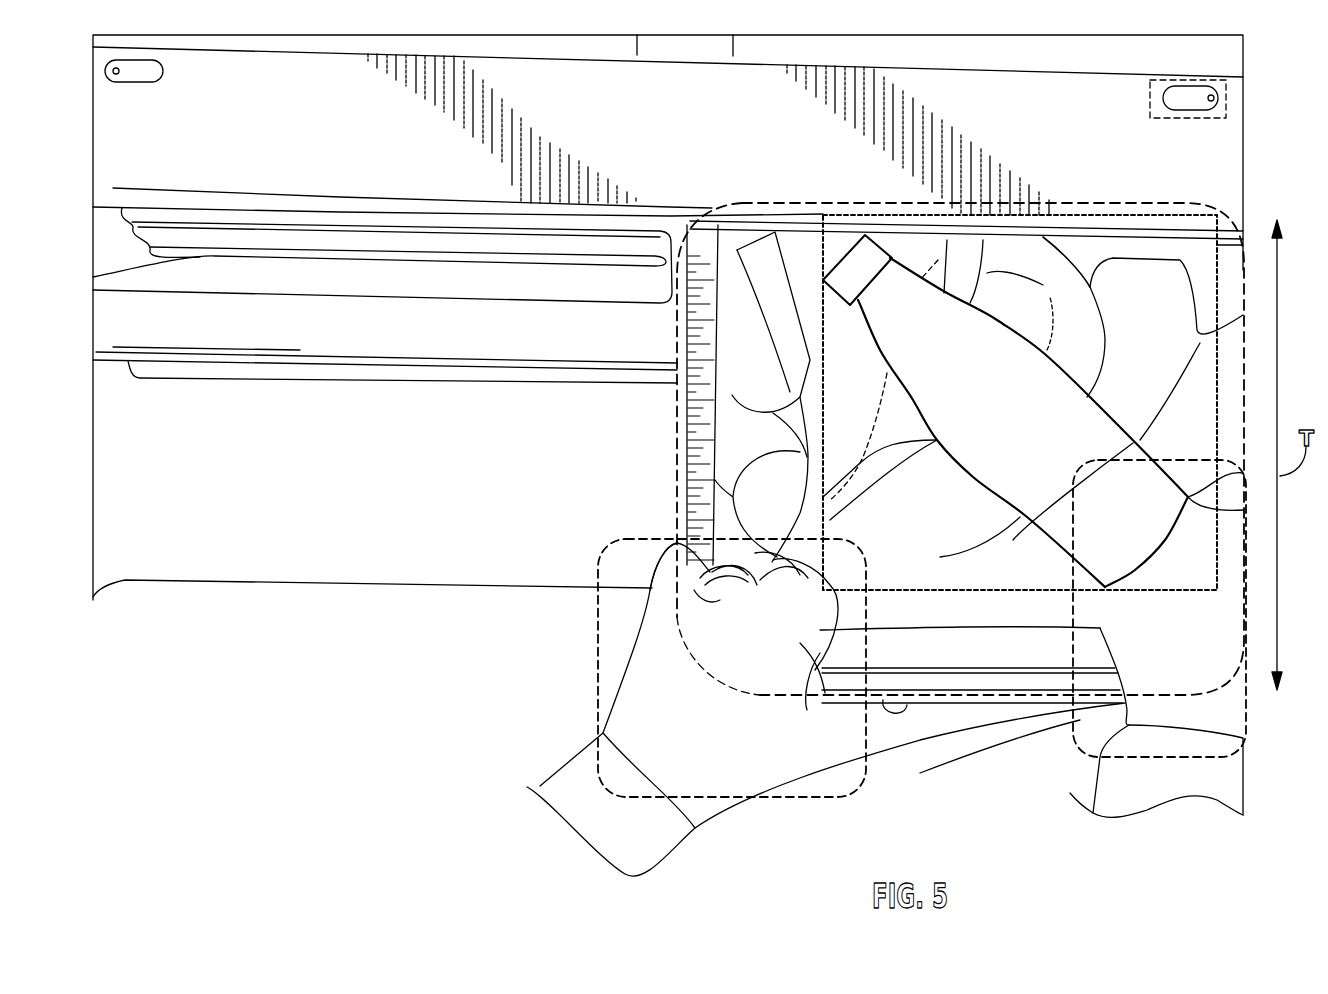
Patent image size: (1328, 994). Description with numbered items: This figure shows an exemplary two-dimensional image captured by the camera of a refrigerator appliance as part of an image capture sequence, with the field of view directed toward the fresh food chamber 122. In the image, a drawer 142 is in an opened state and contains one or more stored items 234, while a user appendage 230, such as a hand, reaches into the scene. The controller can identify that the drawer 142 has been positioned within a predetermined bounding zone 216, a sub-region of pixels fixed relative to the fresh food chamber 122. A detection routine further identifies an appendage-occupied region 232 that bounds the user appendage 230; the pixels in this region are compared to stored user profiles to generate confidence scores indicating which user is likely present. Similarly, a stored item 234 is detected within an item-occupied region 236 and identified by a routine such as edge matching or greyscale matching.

The fresh food chamber 122 is at (667, 75).
The drawer 142 is at (690, 455).
The bounding zone 216 is at (677, 420).
The user appendage 230 is at (840, 580).
The appendage-occupied region 232 is at (598, 635).
The stored item 234 is at (997, 325).
The item-occupied region 236 is at (822, 362).